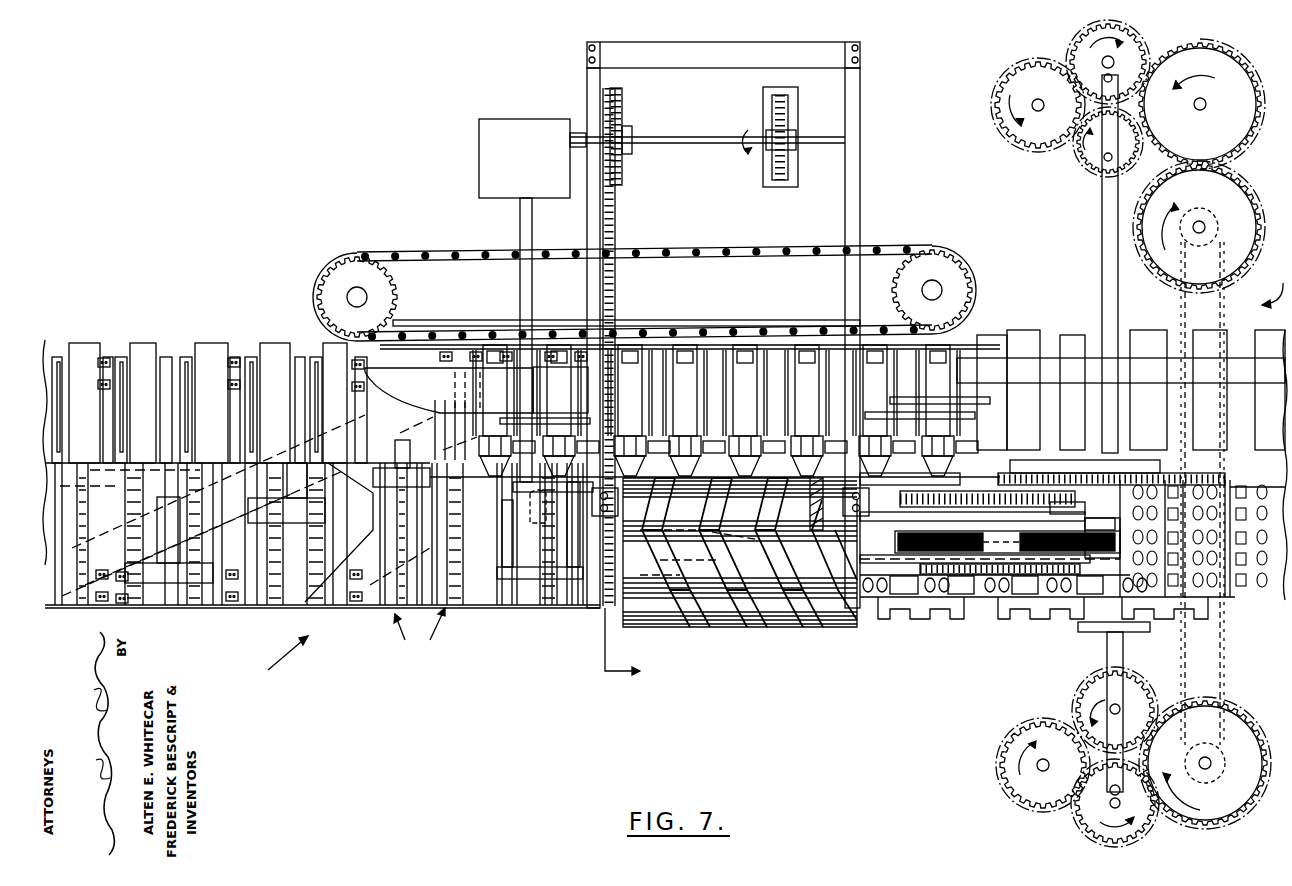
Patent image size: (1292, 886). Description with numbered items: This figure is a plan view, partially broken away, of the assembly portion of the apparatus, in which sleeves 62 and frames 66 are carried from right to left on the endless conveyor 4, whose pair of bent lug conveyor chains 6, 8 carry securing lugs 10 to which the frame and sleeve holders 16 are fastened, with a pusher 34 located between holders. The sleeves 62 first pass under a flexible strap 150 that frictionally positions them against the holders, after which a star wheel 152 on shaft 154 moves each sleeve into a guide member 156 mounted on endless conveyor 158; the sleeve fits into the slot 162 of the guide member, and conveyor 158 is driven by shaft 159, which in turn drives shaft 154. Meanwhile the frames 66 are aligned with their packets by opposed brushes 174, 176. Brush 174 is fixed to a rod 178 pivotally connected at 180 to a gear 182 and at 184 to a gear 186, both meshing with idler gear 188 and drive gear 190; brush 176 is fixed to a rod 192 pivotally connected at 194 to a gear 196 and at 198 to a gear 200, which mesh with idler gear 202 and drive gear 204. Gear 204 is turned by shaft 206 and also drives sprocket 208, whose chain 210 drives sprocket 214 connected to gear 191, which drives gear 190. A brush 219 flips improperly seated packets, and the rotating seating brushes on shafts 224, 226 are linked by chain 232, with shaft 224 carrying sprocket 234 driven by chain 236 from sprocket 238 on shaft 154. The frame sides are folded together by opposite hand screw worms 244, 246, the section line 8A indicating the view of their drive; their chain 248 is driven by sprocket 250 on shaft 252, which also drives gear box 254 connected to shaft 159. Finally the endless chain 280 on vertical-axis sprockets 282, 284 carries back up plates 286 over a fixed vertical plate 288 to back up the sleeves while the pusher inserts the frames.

The endless conveyor 4 is at (765, 472).
The bent lug conveyor chain 6 is at (356, 600).
The bent lug conveyor chain 8 is at (236, 355).
The section line 8A is at (638, 646).
The securing lug 10 is at (104, 352).
The frame and sleeve holder 16 is at (419, 634).
The pusher 34 is at (505, 598).
The sleeve 62 is at (207, 352).
The frame 66 is at (545, 600).
The flexible strap 150 is at (1063, 357).
The star wheel 152 is at (985, 397).
The shaft 154 is at (969, 496).
The guide member 156 is at (727, 436).
The endless conveyor 158 is at (660, 436).
The shaft 159 is at (519, 222).
The slot 162 is at (548, 425).
The brush 174 is at (1236, 494).
The brush 176 is at (1228, 598).
The rod 178 is at (1102, 248).
The pivotal connection 180 is at (1102, 176).
The gear 182 is at (1080, 167).
The pivotal connection 184 is at (1118, 75).
The gear 186 is at (1135, 48).
The idler gear 188 is at (1010, 90).
The drive gear 190 is at (1240, 68).
The gear 191 is at (1252, 220).
The rod 192 is at (1107, 661).
The pivotal connection 194 is at (1120, 705).
The gear 196 is at (1085, 713).
The pivotal connection 198 is at (1110, 792).
The gear 200 is at (1094, 826).
The idler gear 202 is at (1000, 768).
The drive gear 204 is at (1250, 731).
The shaft 206 is at (1210, 768).
The sprocket 208 is at (1230, 720).
The chain 210 is at (1232, 663).
The sprocket 214 is at (1218, 210).
The brush 219 is at (1108, 553).
The brush shaft 224 is at (1085, 508).
The brush shaft 226 is at (940, 612).
The chain 232 is at (985, 606).
The sprocket 234 is at (1070, 472).
The chain 236 is at (929, 478).
The sprocket 238 is at (992, 539).
The screw worm 244 is at (636, 628).
The screw worm 246 is at (796, 504).
The chain 248 is at (616, 214).
The sprocket 250 is at (625, 110).
The shaft 252 is at (680, 137).
The gear box 254 is at (531, 127).
The endless chain 280 is at (755, 252).
The sprocket 282 is at (342, 272).
The sprocket 284 is at (945, 265).
The back up plate 286 is at (745, 342).
The fixed vertical plate 288 is at (700, 328).